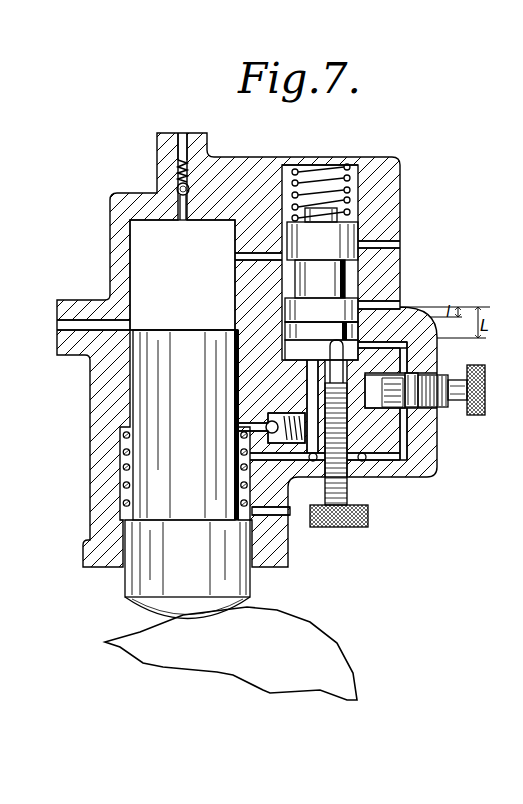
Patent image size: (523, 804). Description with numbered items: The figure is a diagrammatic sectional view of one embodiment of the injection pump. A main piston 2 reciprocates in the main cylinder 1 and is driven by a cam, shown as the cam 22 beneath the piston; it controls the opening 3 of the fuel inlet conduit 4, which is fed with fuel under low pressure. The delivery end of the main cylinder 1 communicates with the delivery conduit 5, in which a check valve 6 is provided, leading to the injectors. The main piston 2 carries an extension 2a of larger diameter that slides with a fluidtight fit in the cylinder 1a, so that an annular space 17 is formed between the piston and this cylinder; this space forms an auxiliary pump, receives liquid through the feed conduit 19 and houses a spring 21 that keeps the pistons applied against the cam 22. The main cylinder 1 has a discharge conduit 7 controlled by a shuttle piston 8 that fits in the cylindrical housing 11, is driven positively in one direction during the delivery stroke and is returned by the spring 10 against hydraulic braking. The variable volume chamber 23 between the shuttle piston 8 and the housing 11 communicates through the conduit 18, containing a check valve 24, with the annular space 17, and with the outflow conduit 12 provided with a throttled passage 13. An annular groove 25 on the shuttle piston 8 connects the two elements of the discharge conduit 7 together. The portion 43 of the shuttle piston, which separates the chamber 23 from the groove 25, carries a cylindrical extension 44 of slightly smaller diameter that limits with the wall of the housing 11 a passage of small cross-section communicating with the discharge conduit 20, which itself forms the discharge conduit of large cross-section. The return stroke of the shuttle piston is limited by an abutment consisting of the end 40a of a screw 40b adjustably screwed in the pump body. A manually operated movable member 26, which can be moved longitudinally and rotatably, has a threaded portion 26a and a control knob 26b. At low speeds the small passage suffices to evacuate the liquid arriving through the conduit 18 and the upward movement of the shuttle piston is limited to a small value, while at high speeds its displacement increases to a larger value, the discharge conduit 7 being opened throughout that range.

The main cylinder 1 is at (183, 282).
The cylinder 1a is at (122, 510).
The main piston 2 is at (186, 389).
The extension 2a is at (196, 561).
The opening 3 is at (133, 328).
The fuel inlet conduit 4 is at (60, 326).
The delivery conduit 5 is at (184, 142).
The check valve 6 is at (176, 186).
The discharge conduit 7 is at (250, 257).
The shuttle piston 8 is at (322, 251).
The spring 10 is at (333, 170).
The cylindrical housing 11 is at (408, 350).
The outflow conduit 12 is at (385, 458).
The throttled passage 13 is at (407, 372).
The annular space 17 is at (123, 465).
The conduit 18 is at (313, 462).
The feed conduit 19 is at (278, 515).
The discharge conduit 20 is at (400, 303).
The spring 21 is at (124, 437).
The workpiece 22 is at (320, 648).
The variable volume chamber 23 is at (318, 322).
The check valve 24 is at (240, 430).
The annular groove 25 is at (346, 280).
The movable member 26 is at (449, 402).
The threaded portion 26a is at (441, 410).
The control knob 26b is at (485, 387).
The end of screw 40a is at (321, 310).
The screw 40b is at (368, 517).
The portion of shuttle piston 43 is at (288, 310).
The cylindrical extension 44 is at (288, 330).